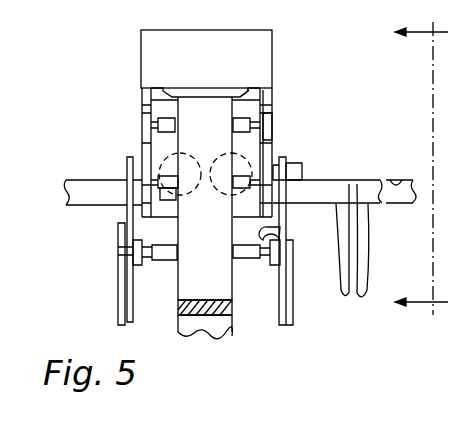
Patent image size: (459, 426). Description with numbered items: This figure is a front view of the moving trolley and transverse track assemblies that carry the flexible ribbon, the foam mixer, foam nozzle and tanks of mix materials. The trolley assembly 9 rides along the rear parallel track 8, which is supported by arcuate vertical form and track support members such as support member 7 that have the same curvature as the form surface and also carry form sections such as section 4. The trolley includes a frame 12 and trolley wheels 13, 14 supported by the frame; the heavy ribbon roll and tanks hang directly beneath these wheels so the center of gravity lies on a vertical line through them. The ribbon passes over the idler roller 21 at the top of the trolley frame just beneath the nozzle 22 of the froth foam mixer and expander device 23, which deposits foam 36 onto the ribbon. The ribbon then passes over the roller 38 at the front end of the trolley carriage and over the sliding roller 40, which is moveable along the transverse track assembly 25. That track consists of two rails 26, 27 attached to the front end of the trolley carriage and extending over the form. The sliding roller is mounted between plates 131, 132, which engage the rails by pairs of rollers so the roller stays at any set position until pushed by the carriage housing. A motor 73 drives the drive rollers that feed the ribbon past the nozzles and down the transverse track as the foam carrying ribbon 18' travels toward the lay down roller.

The form section 4 is at (424, 167).
The vertical form and track support member 7 is at (371, 242).
The rear parallel track 8 is at (371, 179).
The trolley assembly 9 is at (132, 98).
The frame 12 is at (273, 108).
The trolley wheel 13 is at (243, 152).
The trolley wheel 14 is at (172, 162).
The foam carrying ribbon 18' is at (233, 337).
The idler roller 21 is at (262, 122).
The nozzle 22 is at (242, 98).
The froth foam mixer and expander device 23 is at (274, 33).
The transverse track assembly 25 is at (104, 277).
The rail 26 is at (122, 312).
The rail 27 is at (293, 308).
The foam 36 is at (222, 270).
The roller 38 is at (172, 189).
The sliding roller 40 is at (247, 261).
The motor 73 is at (303, 161).
The plate 131 is at (138, 266).
The plate 132 is at (292, 232).